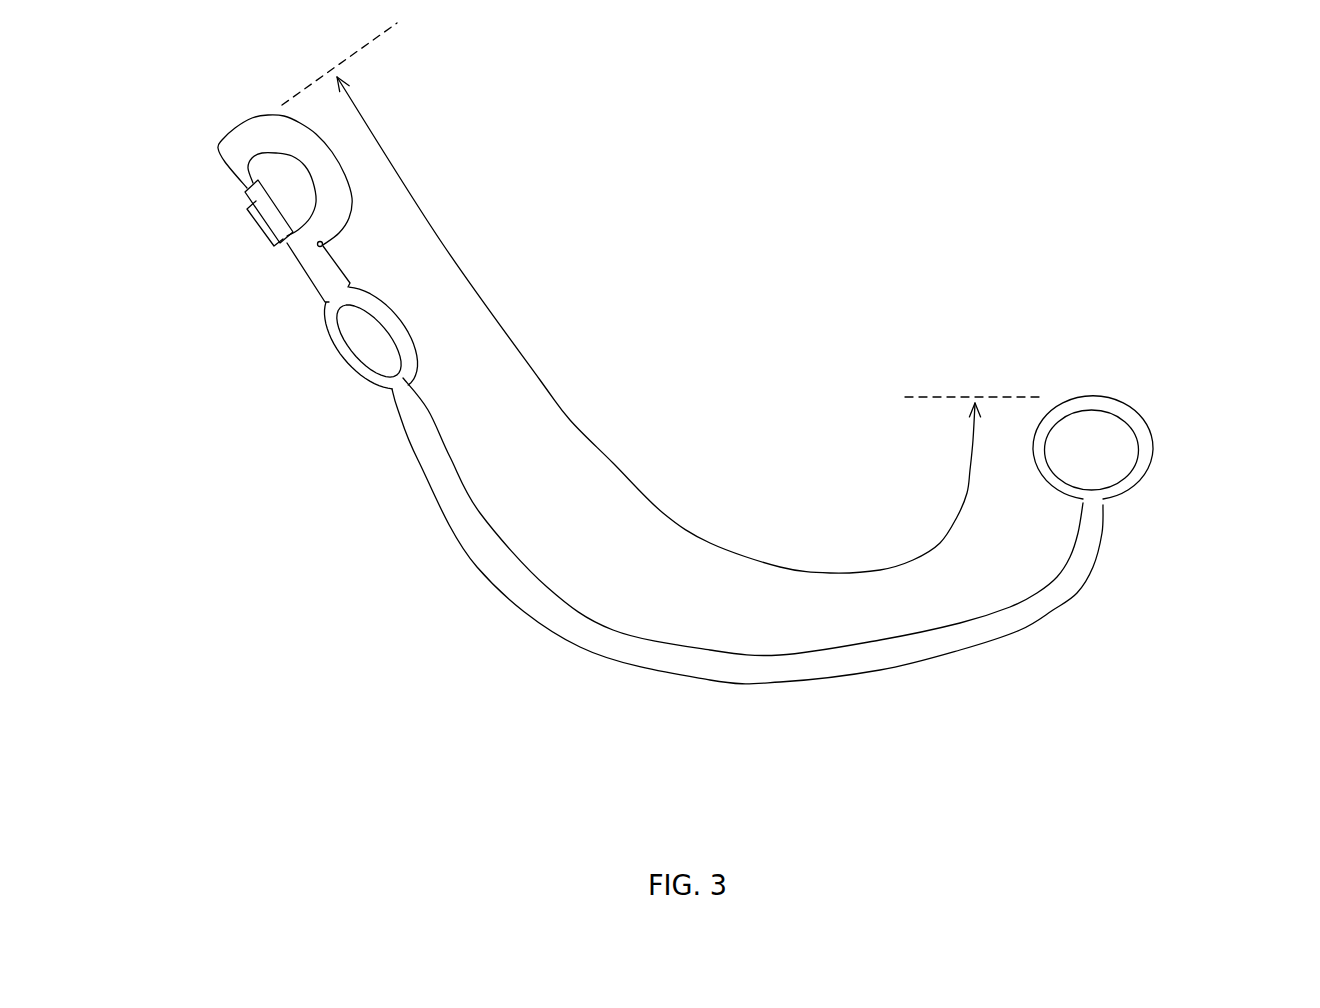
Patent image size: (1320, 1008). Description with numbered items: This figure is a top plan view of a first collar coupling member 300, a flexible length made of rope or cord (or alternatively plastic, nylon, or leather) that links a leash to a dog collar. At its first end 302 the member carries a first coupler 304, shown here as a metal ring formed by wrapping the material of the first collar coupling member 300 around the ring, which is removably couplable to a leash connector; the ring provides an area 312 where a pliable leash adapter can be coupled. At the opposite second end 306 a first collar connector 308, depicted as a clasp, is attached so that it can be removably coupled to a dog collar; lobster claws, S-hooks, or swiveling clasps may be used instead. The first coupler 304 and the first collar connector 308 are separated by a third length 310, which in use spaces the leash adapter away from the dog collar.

The first collar coupling member 300 is at (698, 681).
The first end 302 is at (1113, 513).
The first coupler 304 is at (1092, 407).
The second end 306 is at (367, 398).
The first collar connector 308 is at (317, 277).
The third length 310 is at (562, 407).
The area 312 is at (1105, 443).